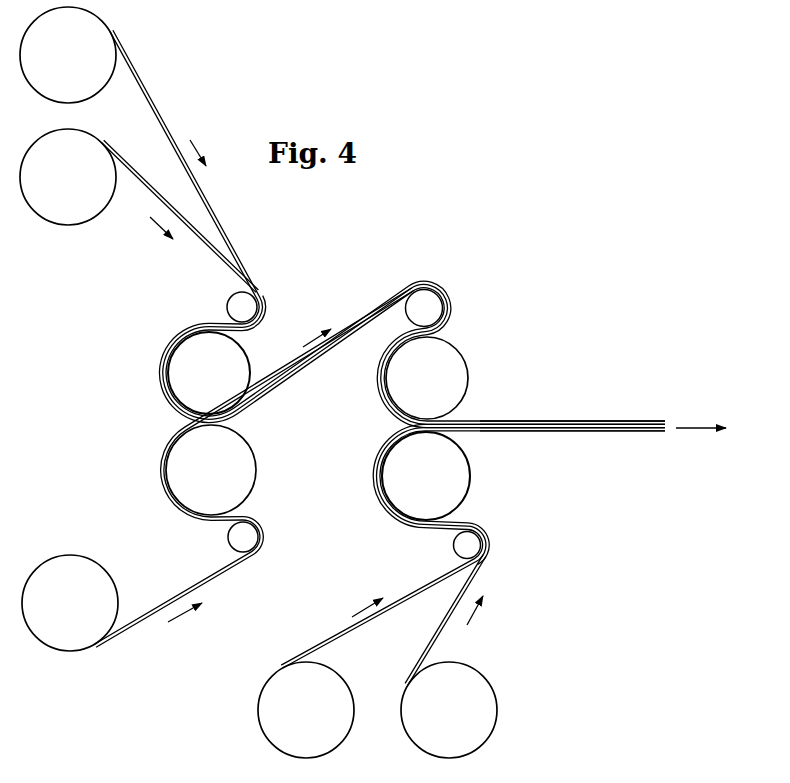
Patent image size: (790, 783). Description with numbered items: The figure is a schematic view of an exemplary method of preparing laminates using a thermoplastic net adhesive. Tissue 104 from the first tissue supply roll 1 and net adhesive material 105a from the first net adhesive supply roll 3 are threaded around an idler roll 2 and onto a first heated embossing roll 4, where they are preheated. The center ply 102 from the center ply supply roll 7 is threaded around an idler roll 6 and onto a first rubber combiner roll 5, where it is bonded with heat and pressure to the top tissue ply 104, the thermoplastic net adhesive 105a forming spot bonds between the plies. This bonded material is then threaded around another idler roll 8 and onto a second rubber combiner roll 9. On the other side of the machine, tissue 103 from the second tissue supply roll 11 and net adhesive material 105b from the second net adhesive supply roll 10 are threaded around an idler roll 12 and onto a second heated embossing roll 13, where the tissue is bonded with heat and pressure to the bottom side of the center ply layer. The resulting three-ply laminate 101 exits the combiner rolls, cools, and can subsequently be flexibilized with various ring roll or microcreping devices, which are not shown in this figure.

The first tissue supply roll 1 is at (73, 64).
The idler roll 2 is at (74, 186).
The first net adhesive supply roll 3 is at (239, 306).
The first heated embossing roll 4 is at (216, 383).
The first rubber combiner roll 5 is at (218, 479).
The idler roll 6 is at (240, 538).
The center ply supply roll 7 is at (78, 611).
The idler roll 8 is at (423, 303).
The second rubber combiner roll 9 is at (434, 387).
The second net adhesive supply roll 10 is at (293, 718).
The second tissue supply roll 11 is at (460, 718).
The idler roll 12 is at (465, 545).
The second heated embossing roll 13 is at (413, 487).
The laminate 101 is at (622, 418).
The center ply 102 is at (333, 357).
The tissue 103 is at (474, 584).
The tissue 104 is at (151, 97).
The net adhesive material 105a is at (207, 252).
The net adhesive material 105b is at (440, 578).